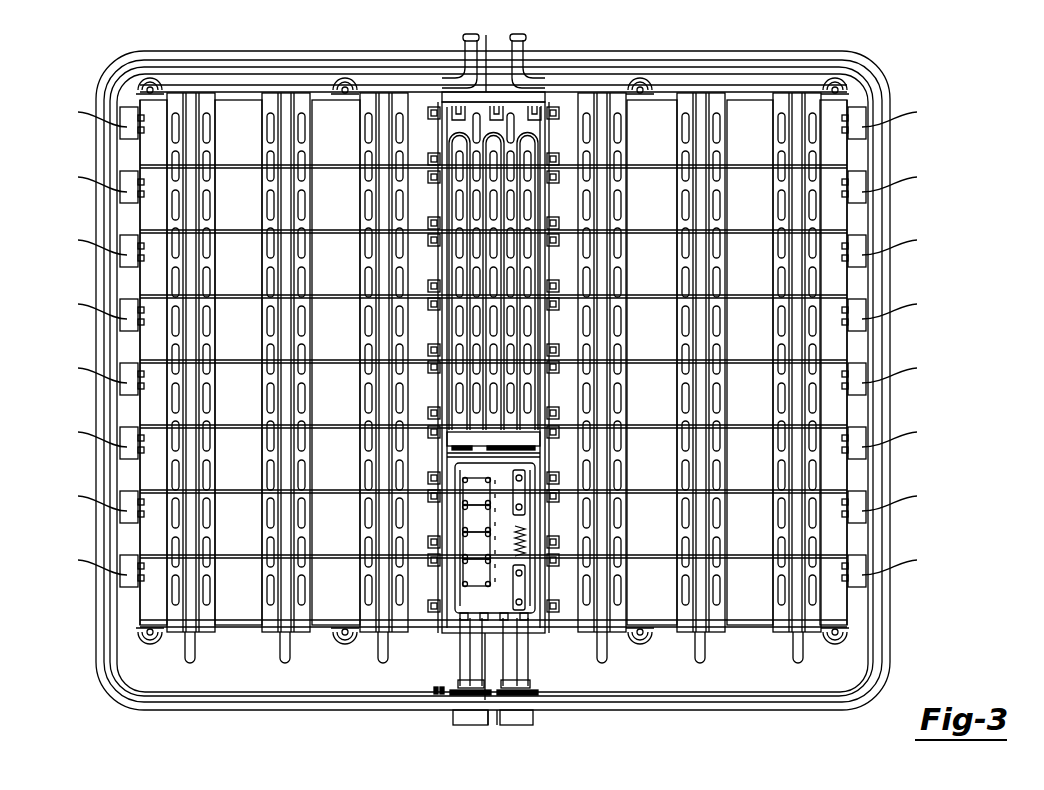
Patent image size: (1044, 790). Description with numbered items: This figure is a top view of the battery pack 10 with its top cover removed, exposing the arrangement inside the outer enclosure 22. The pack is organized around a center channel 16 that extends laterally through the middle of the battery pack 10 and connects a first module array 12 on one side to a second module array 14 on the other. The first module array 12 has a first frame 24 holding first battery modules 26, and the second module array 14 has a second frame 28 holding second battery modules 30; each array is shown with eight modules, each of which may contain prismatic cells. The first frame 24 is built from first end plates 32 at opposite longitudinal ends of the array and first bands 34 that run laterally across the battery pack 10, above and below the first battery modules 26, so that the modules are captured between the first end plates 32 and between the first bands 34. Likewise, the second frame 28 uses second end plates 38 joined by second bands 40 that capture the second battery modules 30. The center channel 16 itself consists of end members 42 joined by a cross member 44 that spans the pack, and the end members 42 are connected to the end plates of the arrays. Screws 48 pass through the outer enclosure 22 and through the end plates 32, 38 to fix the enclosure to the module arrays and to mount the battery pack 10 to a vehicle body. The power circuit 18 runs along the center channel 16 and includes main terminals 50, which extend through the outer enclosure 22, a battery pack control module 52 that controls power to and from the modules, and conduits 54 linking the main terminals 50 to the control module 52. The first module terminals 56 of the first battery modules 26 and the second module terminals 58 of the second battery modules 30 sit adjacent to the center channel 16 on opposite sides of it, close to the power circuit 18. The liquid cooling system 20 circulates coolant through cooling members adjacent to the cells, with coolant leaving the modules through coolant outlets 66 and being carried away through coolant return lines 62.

The battery pack 10 is at (940, 68).
The first module array 12 is at (232, 88).
The second module array 14 is at (754, 91).
The center channel 16 is at (503, 94).
The power circuit 18 is at (490, 740).
The liquid cooling system 20 is at (852, 66).
The outer enclosure 22 is at (758, 712).
The first frame 24 is at (312, 90).
The first battery modules 26 is at (153, 157).
The second frame 28 is at (683, 91).
The second battery modules 30 is at (835, 155).
The first end plates 32 is at (235, 632).
The first bands 34 is at (190, 93).
The second end plates 38 is at (738, 93).
The second bands 40 is at (601, 93).
The end members 42 is at (493, 670).
The cross member 44 is at (445, 102).
The screws 48 is at (148, 88).
The main terminals 50 is at (455, 720).
The battery pack control module 52 is at (464, 604).
The conduits 54 is at (460, 661).
The first module terminals 56 is at (440, 159).
The second module terminals 58 is at (550, 159).
The coolant return lines 62 is at (465, 43).
The coolant outlets 66 is at (496, 344).